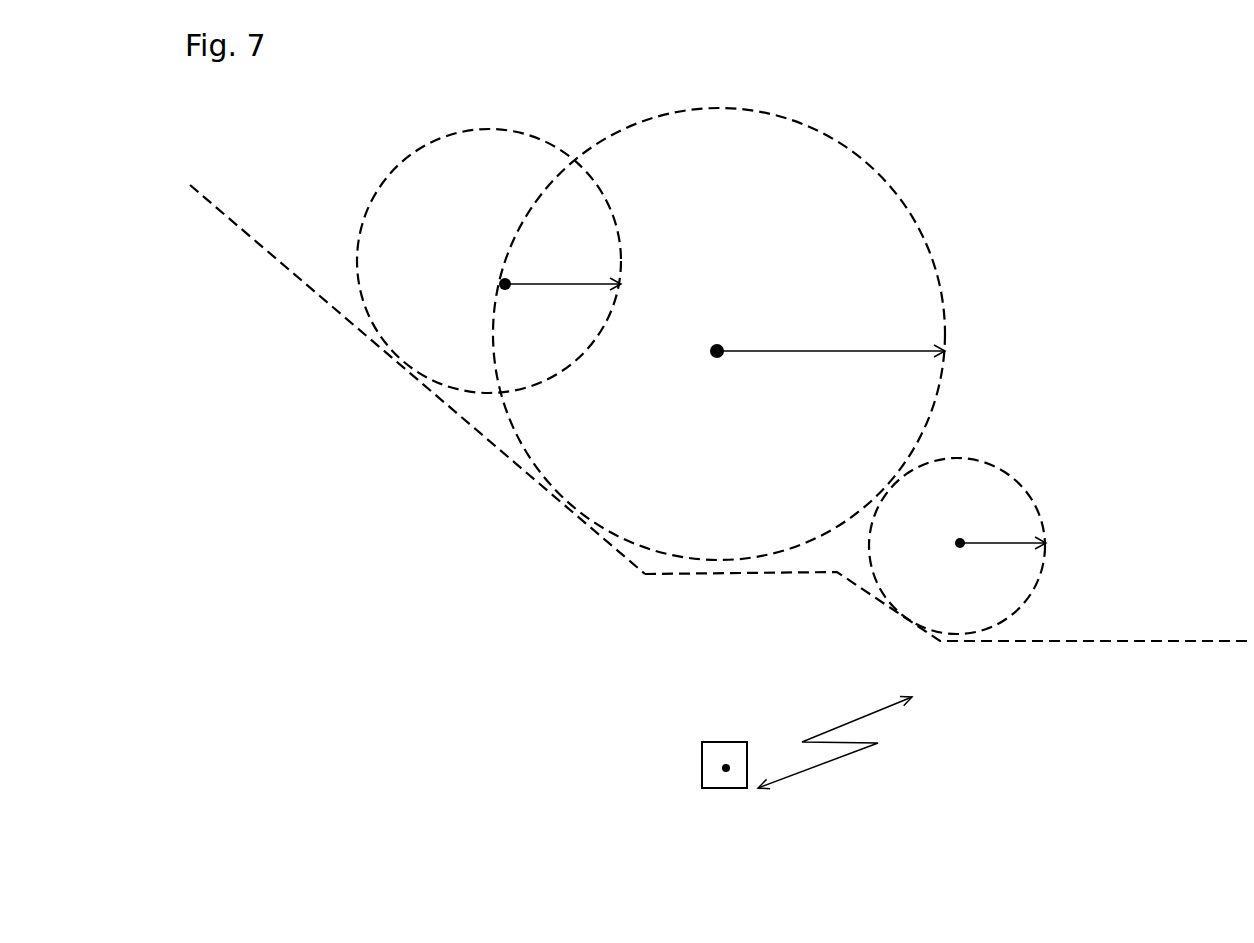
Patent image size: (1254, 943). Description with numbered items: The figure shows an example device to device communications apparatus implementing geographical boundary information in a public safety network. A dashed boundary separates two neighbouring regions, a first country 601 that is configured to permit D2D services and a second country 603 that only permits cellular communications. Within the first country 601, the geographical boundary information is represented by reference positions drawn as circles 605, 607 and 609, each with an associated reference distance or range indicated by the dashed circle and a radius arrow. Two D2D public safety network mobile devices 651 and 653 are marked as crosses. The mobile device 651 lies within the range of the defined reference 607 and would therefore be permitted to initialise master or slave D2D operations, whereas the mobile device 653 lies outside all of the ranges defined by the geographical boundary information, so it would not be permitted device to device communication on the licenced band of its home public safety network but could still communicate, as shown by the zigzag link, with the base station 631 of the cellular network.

The first country 601 is at (417, 373).
The second country 603 is at (737, 453).
The reference position circle 605 is at (489, 261).
The reference position circle 607 is at (719, 334).
The reference position circle 609 is at (957, 546).
The D2D public safety network mobile device 651 is at (690, 488).
The D2D public safety network mobile device 653 is at (958, 702).
The base station 631 is at (807, 766).